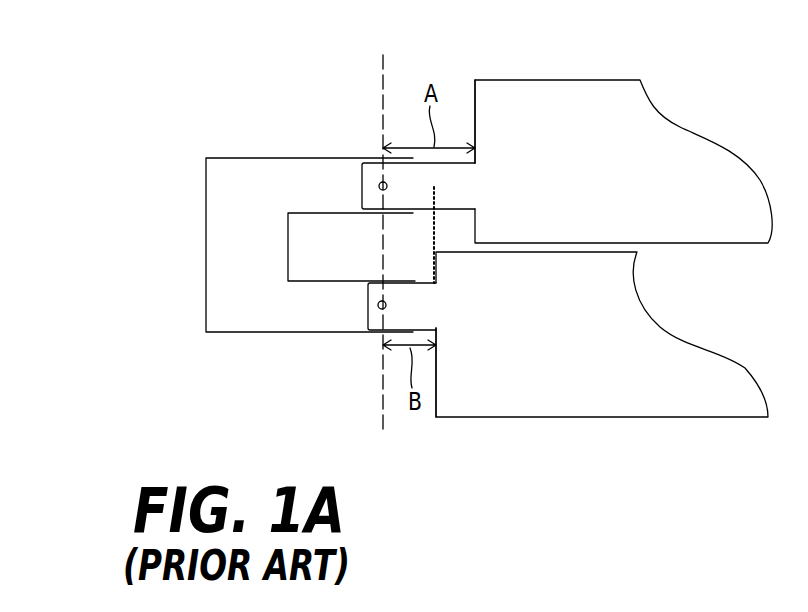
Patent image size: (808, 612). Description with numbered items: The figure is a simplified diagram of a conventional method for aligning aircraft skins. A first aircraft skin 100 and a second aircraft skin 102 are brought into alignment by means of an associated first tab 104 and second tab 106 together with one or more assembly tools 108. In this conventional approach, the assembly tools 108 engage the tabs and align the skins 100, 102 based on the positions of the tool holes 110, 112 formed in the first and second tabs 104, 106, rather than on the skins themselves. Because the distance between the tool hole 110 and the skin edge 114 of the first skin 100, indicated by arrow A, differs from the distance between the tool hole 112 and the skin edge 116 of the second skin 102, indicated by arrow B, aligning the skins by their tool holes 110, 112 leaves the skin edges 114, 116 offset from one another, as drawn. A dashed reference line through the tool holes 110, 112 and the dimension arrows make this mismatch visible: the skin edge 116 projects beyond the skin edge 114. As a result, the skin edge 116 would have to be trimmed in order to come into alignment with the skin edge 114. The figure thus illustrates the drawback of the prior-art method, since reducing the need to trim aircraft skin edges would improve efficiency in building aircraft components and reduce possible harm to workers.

The first aircraft skin 100 is at (607, 80).
The second aircraft skin 102 is at (640, 418).
The first tab 104 is at (362, 178).
The second tab 106 is at (368, 302).
The assembly tool 108 is at (236, 160).
The tool hole 110 is at (379, 186).
The tool hole 112 is at (378, 303).
The skin edge 114 is at (475, 103).
The skin edge 116 is at (436, 417).